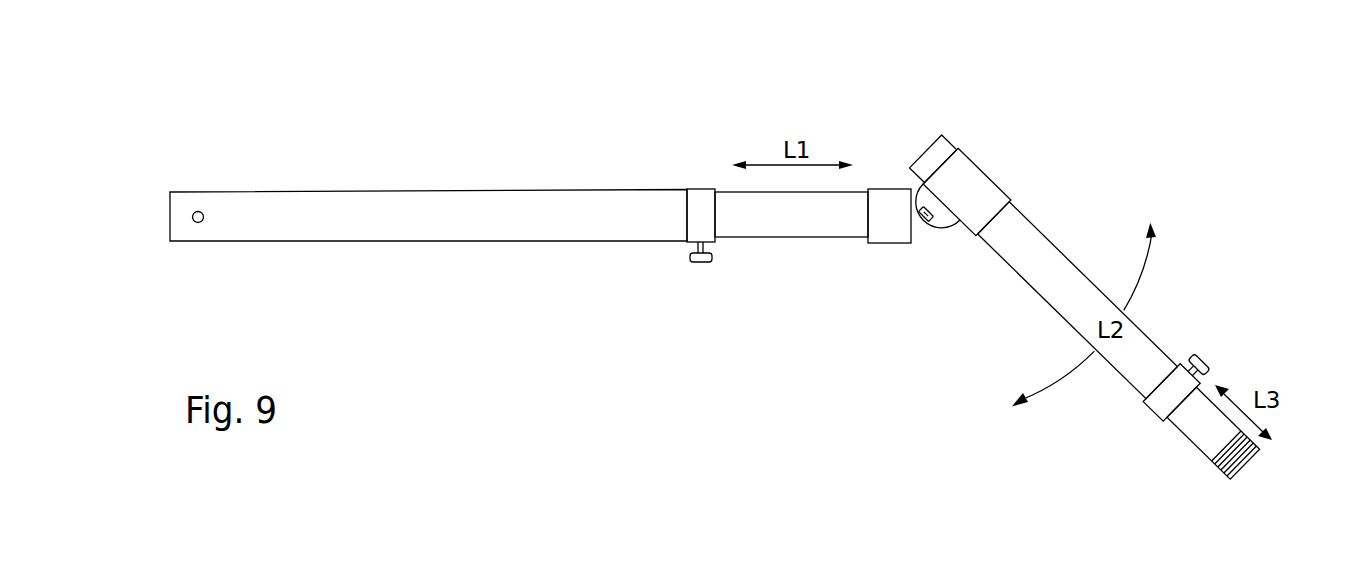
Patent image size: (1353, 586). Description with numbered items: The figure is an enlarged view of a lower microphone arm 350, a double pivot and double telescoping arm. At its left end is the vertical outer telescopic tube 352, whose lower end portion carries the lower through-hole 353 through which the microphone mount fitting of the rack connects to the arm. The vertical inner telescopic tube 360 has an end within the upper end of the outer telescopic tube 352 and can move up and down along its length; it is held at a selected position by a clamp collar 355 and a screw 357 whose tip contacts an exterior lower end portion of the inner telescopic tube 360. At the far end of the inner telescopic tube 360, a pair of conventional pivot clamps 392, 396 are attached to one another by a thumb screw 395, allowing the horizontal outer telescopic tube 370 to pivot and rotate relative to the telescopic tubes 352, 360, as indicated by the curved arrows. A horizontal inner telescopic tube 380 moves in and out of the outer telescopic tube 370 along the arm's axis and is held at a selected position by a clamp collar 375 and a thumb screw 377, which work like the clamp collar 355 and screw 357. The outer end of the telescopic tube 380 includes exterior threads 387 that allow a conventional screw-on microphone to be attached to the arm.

The lower microphone arm 350 is at (697, 100).
The vertical outer telescopic tube 352 is at (405, 190).
The lower through-hole 353 is at (163, 181).
The clamp collar 355 is at (661, 224).
The screw 357 is at (659, 269).
The vertical inner telescopic tube 360 is at (794, 243).
The horizontal outer telescopic tube 370 is at (1078, 296).
The clamp collar 375 is at (1175, 373).
The thumb screw 377 is at (1237, 339).
The horizontal inner telescopic tube 380 is at (1231, 443).
The exterior threads 387 is at (1282, 465).
The pivot clamp 392 is at (868, 176).
The thumb screw 395 is at (961, 237).
The pivot clamp 396 is at (989, 185).